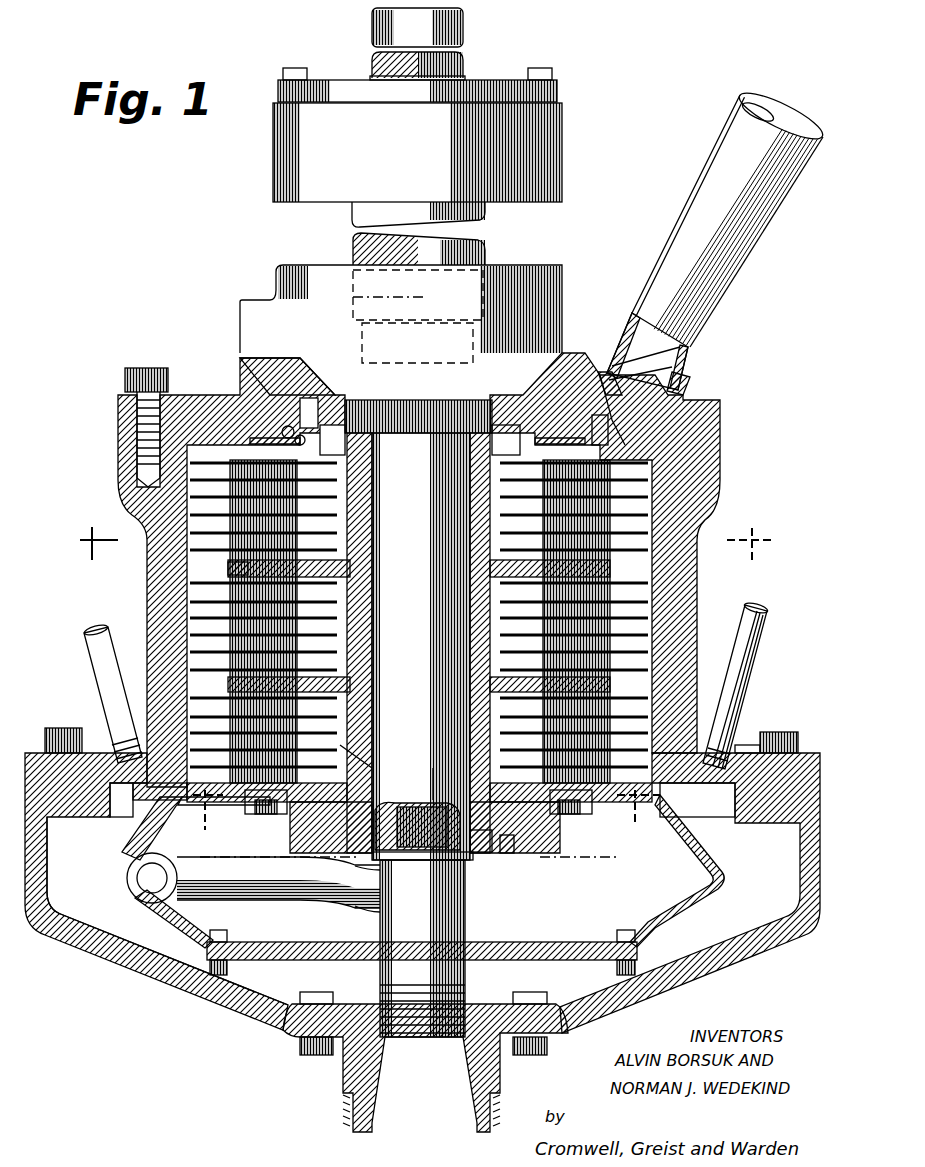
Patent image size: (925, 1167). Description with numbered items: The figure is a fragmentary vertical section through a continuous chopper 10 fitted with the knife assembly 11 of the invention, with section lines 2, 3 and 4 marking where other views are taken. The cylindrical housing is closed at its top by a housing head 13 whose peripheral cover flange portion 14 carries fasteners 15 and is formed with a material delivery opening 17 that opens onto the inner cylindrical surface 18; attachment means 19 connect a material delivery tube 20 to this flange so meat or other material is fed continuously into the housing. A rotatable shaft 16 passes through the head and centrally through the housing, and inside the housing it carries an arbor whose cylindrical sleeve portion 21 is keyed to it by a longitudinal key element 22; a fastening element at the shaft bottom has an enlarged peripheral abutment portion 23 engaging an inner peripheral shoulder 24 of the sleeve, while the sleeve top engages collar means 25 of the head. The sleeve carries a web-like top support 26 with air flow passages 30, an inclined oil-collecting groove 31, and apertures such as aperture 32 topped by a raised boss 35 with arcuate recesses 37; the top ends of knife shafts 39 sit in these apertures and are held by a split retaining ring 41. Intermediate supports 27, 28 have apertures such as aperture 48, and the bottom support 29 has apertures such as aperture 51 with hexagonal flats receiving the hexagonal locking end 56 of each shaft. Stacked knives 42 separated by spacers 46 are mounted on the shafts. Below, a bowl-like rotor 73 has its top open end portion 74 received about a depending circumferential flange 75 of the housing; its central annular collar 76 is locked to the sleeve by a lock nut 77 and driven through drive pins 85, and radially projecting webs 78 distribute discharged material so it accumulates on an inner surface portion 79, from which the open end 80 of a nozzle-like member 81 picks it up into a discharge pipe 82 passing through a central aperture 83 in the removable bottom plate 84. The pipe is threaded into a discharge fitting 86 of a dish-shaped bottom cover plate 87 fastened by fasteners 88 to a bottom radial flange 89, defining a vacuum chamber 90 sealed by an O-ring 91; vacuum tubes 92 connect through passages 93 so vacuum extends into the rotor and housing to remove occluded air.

The continuous chopper 10 is at (95, 301).
The knife assembly 11 is at (662, 560).
The housing head 13 is at (242, 302).
The peripheral cover flange portion 14 is at (180, 395).
The fasteners 15 is at (152, 367).
The rotatable shaft 16 is at (428, 501).
The material delivery opening 17 is at (622, 348).
The inner cylindrical surface 18 is at (680, 684).
The attachment means 19 is at (690, 376).
The material delivery tube 20 is at (765, 234).
The cylindrical sleeve portion 21 is at (367, 607).
The longitudinal key element 22 is at (470, 795).
The enlarged peripheral abutment portion 23 is at (395, 858).
The inner peripheral shoulder 24 is at (377, 873).
The collar means 25 is at (505, 398).
The top support 26 is at (302, 435).
The intermediate support 27 is at (232, 568).
The intermediate support 28 is at (190, 678).
The bottom support 29 is at (368, 768).
The air flow passages 30 is at (333, 438).
The inclined groove 31 is at (290, 426).
The aperture 32 is at (282, 440).
The raised boss 35 is at (613, 420).
The arcuate recesses 37 is at (262, 420).
The shaft 39 is at (230, 410).
The retaining ring 41 is at (600, 380).
The knives 42 is at (193, 560).
The spacers 46 is at (297, 523).
The aperture 48 is at (228, 568).
The aperture 51 is at (263, 812).
The hexagonal locking end 56 is at (268, 818).
The rotor 73 is at (132, 863).
The top open end portion 74 is at (183, 798).
The depending circumferential flange 75 is at (193, 820).
The central annular collar 76 is at (432, 780).
The lock nut 77 is at (500, 860).
The radially projecting webs 78 is at (235, 853).
The inner surface portion 79 is at (725, 882).
The open end 80 is at (130, 893).
The nozzle-like member 81 is at (205, 898).
The discharge pipe 82 is at (450, 900).
The central aperture 83 is at (453, 960).
The bottom plate 84 is at (530, 957).
The drive pins 85 is at (535, 860).
The discharge fitting 86 is at (350, 1065).
The bottom cover plate 87 is at (153, 983).
The fasteners 88 is at (73, 728).
The bottom radial flange 89 is at (820, 753).
The vacuum chamber 90 is at (145, 950).
The O-ring 91 is at (747, 753).
The vacuum tubes 92 is at (86, 648).
The passages 93 is at (135, 807).
The section line 2- 2 is at (419, 549).
The section line 3- 3 is at (416, 502).
The section line 4- 4 is at (426, 818).